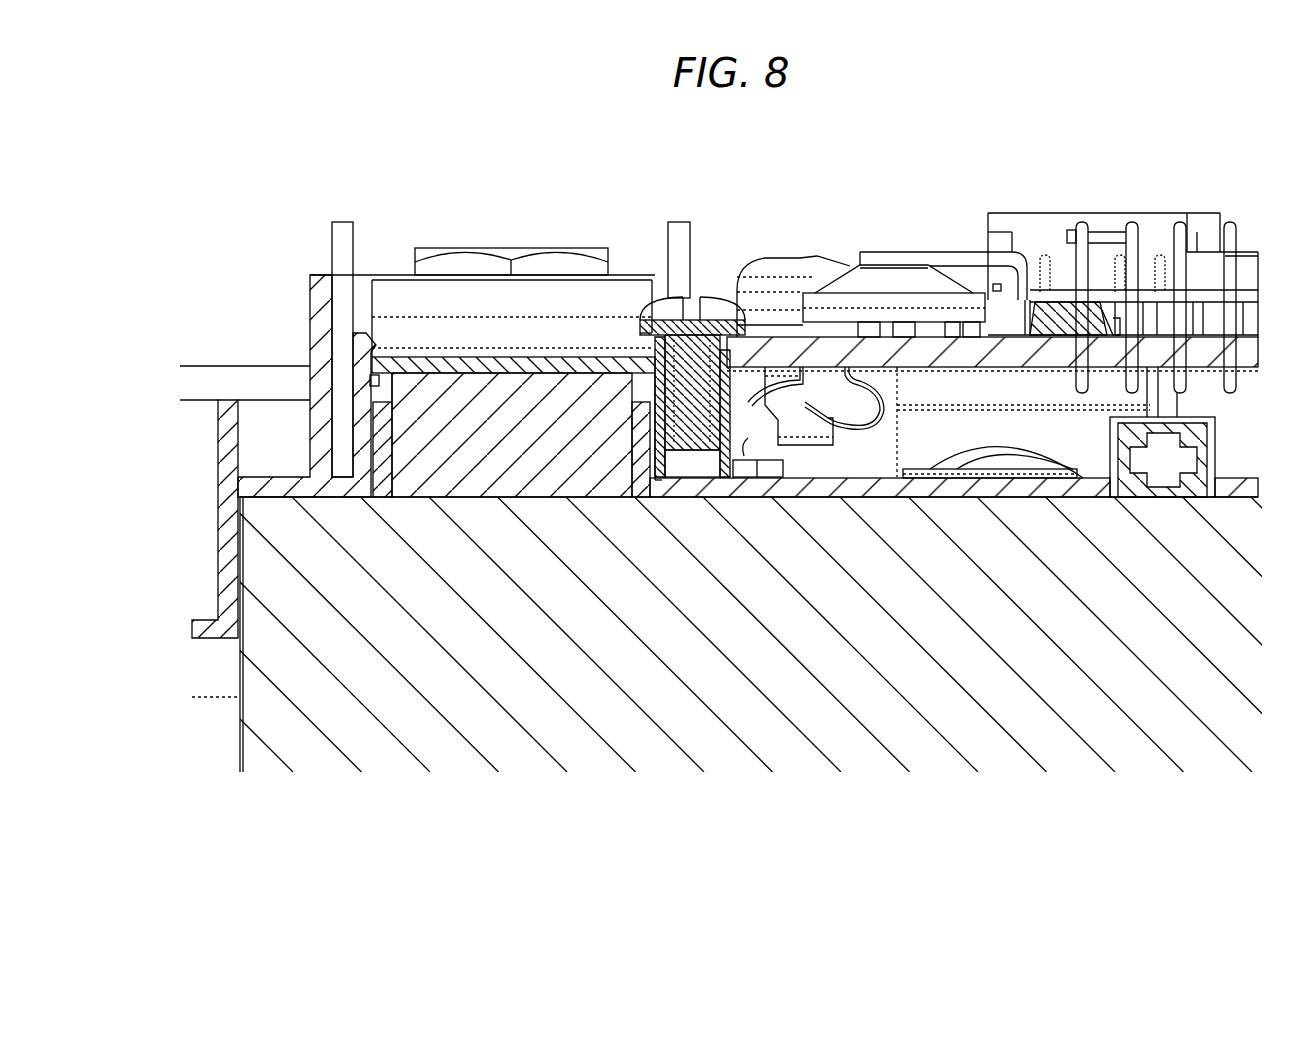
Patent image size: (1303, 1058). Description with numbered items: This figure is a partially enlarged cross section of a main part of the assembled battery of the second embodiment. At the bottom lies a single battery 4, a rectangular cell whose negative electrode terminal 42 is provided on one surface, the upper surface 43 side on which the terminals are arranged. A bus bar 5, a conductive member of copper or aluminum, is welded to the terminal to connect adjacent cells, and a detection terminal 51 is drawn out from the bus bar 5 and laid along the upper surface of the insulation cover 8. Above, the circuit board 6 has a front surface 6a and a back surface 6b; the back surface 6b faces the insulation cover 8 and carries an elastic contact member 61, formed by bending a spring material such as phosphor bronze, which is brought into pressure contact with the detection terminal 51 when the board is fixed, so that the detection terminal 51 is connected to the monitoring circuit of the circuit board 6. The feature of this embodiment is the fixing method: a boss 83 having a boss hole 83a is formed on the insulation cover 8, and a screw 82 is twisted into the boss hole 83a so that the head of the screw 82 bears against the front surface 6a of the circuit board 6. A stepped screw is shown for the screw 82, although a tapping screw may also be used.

The single battery 4 is at (530, 707).
The bus bar 5 is at (400, 360).
The circuit board 6 is at (915, 268).
The front surface of the circuit board 6a is at (932, 337).
The back surface of the circuit board 6b is at (944, 383).
The insulation cover 8 is at (232, 404).
The negative electrode terminal 42 is at (462, 420).
The upper surface of the single battery 43 is at (948, 497).
The detection terminal 51 is at (746, 470).
The elastic contact member 61 is at (850, 432).
The screw 82 is at (707, 328).
The boss 83 is at (746, 390).
The boss hole 83a is at (691, 480).